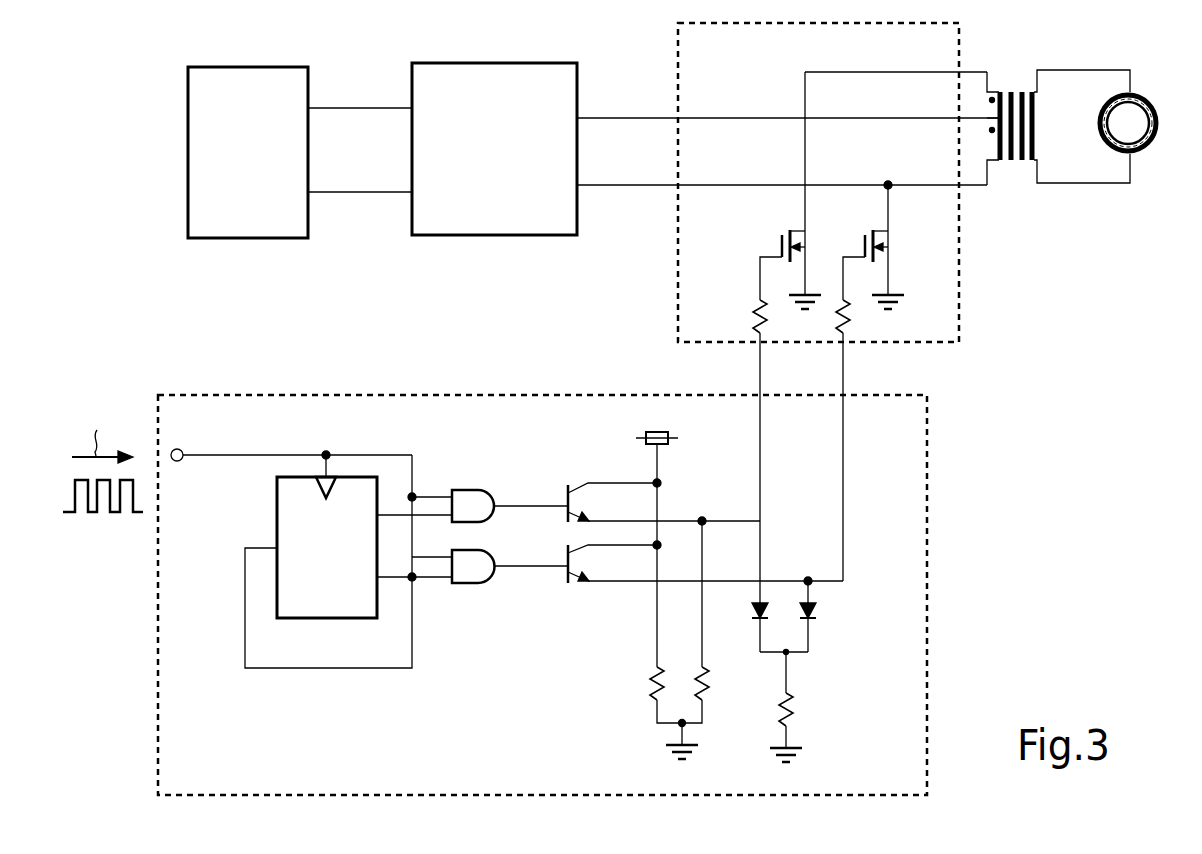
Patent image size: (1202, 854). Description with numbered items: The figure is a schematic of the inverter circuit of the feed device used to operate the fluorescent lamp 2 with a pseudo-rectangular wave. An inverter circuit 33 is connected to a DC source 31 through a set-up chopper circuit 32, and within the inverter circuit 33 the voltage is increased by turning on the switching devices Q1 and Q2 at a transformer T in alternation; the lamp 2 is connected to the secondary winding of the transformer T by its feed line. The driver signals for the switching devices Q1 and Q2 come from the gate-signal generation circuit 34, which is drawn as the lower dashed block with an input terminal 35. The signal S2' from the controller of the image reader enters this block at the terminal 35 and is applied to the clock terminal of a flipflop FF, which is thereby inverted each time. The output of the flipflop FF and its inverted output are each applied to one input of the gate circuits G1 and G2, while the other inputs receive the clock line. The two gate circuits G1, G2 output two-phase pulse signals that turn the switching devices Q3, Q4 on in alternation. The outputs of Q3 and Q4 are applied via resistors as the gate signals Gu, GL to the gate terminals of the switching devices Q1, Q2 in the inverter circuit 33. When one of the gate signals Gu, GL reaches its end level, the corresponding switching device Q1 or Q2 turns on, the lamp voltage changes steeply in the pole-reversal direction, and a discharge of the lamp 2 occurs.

The fluorescent lamp 2 is at (1147, 97).
The DC source 31 is at (248, 66).
The set-up chopper circuit 32 is at (491, 63).
The inverter circuit 33 is at (959, 295).
The gate-signal generation circuit 34 is at (325, 395).
The input terminal 35 is at (177, 449).
The transformer T is at (1011, 86).
The switching device Q1 is at (772, 250).
The switching device Q2 is at (855, 250).
The switching device Q3 is at (570, 485).
The switching device Q4 is at (573, 586).
The gate circuit G1 is at (470, 490).
The gate circuit G2 is at (470, 583).
The gate signal Gu is at (760, 366).
The gate signal GL is at (843, 366).
The flipflop FF is at (277, 519).
The signal S2' is at (103, 458).